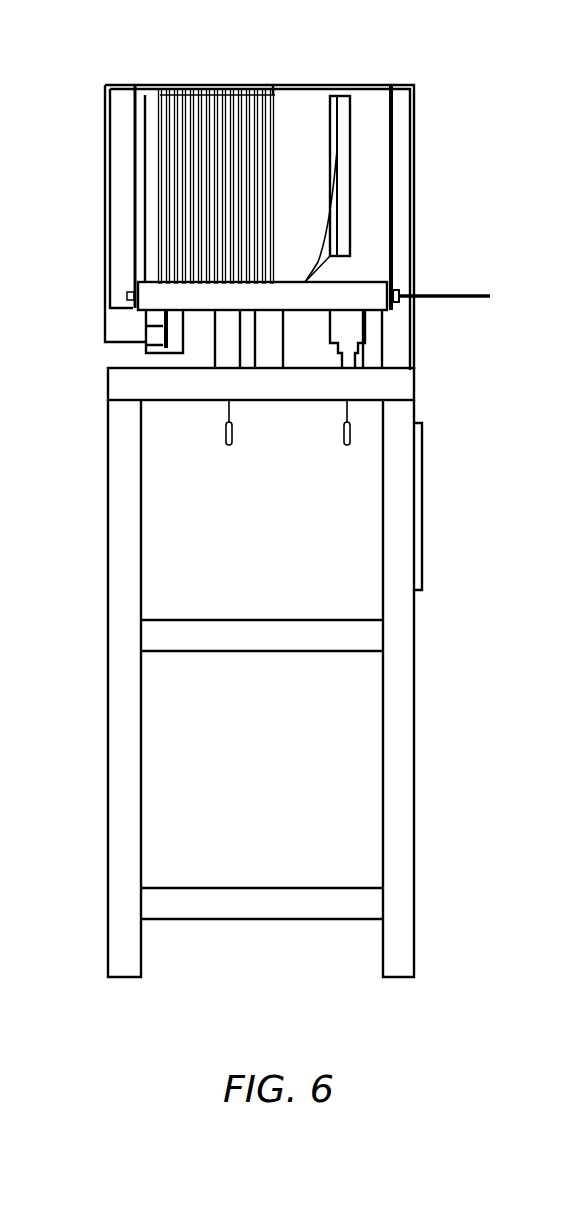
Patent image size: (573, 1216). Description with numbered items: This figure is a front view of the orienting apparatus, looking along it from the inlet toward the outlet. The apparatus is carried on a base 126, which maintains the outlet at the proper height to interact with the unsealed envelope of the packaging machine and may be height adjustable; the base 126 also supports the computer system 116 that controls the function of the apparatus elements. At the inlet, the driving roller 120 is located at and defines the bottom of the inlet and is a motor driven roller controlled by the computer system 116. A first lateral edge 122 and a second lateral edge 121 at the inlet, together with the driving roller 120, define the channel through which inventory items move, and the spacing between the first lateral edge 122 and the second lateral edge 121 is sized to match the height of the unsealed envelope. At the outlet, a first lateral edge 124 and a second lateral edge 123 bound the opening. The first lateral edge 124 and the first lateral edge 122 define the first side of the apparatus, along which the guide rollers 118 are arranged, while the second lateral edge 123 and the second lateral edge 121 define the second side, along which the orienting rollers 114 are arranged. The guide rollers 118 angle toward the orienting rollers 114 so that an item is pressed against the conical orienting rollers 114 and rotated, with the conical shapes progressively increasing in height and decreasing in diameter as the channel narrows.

The orienting rollers 114 is at (343, 198).
The computer system 116 is at (425, 502).
The guide rollers 118 is at (172, 208).
The driving roller 120 is at (153, 302).
The second lateral edge 121 is at (391, 85).
The first lateral edge 122 is at (134, 85).
The second lateral edge 123 is at (333, 96).
The first lateral edge 124 is at (272, 85).
The base 126 is at (120, 598).